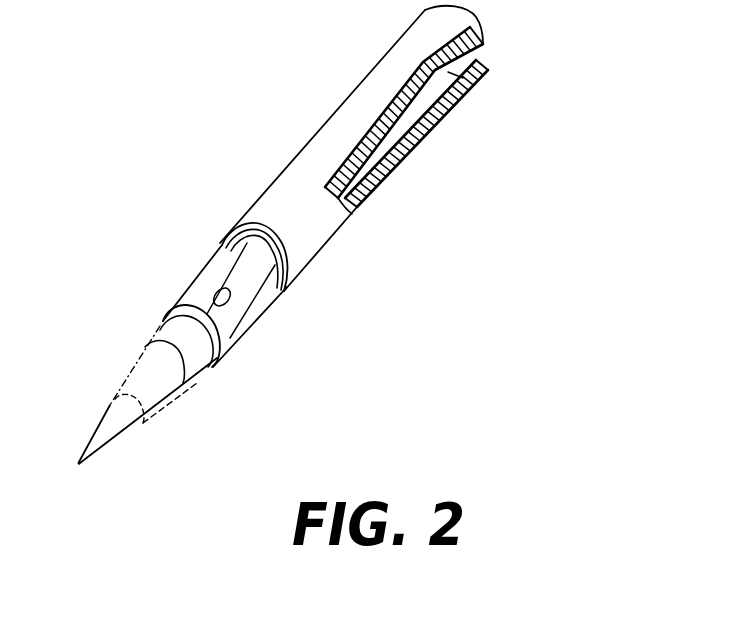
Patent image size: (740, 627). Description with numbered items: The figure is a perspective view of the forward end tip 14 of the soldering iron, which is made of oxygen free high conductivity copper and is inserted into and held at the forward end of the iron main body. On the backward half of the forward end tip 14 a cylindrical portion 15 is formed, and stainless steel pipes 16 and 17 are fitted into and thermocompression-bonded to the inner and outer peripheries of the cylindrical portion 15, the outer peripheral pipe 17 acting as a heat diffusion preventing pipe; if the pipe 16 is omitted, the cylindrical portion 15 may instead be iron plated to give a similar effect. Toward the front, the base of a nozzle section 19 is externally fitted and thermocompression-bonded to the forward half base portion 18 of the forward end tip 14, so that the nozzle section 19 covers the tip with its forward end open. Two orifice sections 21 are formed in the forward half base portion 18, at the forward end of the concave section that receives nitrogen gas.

The forward end tip 14 is at (107, 427).
The cylindrical portion 15 is at (478, 42).
The pipe 16 is at (327, 142).
The outer peripheral pipe 17 is at (440, 90).
The forward half base portion 18 is at (207, 270).
The nozzle section 19 is at (197, 383).
The orifice section 21 is at (230, 302).